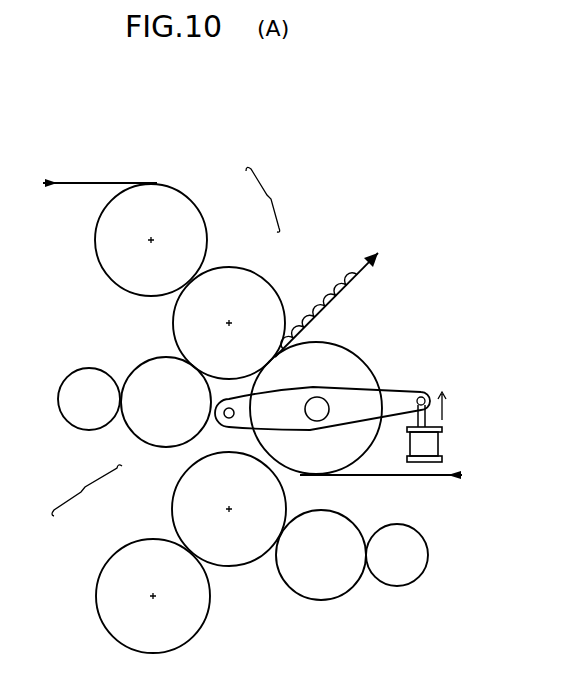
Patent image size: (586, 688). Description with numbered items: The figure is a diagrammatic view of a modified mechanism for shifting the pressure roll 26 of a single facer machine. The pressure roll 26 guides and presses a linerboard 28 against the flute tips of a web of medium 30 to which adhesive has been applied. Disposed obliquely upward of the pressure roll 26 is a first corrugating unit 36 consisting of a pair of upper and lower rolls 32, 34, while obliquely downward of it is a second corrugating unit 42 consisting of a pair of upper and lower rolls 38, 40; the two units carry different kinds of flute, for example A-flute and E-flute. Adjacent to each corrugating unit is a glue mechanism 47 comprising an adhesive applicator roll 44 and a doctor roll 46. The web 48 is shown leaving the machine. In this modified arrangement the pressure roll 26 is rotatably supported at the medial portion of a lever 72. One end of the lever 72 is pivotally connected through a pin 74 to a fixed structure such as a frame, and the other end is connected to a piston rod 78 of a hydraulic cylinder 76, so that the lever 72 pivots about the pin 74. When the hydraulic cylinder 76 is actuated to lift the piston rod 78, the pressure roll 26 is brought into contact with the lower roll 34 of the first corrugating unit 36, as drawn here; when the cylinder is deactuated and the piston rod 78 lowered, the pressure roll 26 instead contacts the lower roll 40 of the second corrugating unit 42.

The pressure roll 26 is at (360, 363).
The linerboard 28 is at (435, 477).
The web of medium 30 is at (80, 181).
The upper roll 32 is at (182, 200).
The lower roll 34 is at (248, 277).
The first corrugating unit 36 is at (274, 199).
The upper roll 38 is at (112, 565).
The lower roll 40 is at (182, 493).
The second corrugating unit 42 is at (87, 489).
The adhesive applicator roll 44 is at (162, 365).
The doctor roll 46 is at (73, 382).
The glue mechanism 47 is at (118, 362).
The web 48 is at (350, 282).
The lever 72 is at (365, 393).
The pin 74 is at (222, 413).
The hydraulic cylinder 76 is at (428, 443).
The piston rod 78 is at (417, 412).